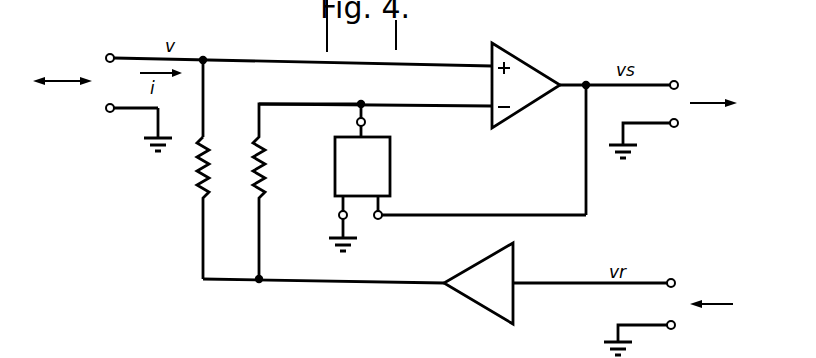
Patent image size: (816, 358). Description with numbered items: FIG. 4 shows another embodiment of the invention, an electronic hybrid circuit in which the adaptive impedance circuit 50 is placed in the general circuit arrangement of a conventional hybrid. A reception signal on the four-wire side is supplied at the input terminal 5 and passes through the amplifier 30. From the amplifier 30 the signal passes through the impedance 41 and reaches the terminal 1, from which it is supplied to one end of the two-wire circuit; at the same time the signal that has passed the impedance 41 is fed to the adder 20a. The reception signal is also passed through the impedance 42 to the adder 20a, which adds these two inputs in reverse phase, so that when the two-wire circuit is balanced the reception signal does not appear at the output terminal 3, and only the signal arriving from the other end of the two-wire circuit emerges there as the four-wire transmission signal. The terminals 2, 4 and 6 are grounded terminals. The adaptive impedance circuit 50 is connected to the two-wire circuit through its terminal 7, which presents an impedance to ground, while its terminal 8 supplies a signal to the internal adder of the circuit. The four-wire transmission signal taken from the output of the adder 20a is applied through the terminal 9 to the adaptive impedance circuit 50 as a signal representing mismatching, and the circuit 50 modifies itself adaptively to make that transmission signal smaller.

The terminal 1 is at (114, 53).
The grounded terminal 2 is at (107, 115).
The output terminal 3 is at (678, 80).
The grounded terminal 4 is at (678, 127).
The input terminal 5 is at (676, 278).
The grounded terminal 6 is at (676, 329).
The terminal 7 is at (366, 122).
The terminal 8 is at (338, 215).
The terminal 9 is at (380, 221).
The adder 20a is at (533, 70).
The amplifier 30 is at (478, 300).
The impedance 41 is at (210, 167).
The impedance 42 is at (255, 190).
The adaptive impedance circuit 50 is at (391, 173).